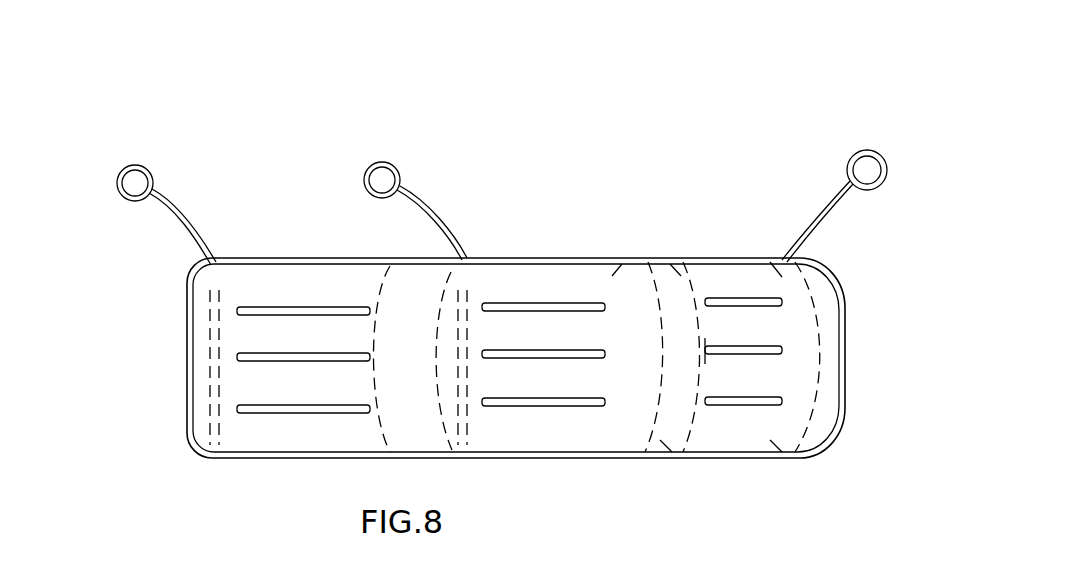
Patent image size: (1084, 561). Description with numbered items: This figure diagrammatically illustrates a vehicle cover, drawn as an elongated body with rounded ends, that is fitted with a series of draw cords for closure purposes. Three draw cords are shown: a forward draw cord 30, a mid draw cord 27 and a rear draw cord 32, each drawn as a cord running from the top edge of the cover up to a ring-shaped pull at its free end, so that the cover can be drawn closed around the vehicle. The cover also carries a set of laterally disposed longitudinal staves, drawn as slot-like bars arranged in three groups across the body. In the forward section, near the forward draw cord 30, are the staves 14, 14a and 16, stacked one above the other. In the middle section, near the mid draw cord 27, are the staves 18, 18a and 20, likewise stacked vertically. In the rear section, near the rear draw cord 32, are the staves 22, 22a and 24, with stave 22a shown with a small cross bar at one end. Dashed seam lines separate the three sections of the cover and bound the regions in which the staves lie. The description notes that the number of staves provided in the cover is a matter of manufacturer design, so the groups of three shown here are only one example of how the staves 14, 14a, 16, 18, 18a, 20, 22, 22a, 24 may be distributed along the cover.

The longitudinal stave 14 is at (293, 303).
The longitudinal stave 14a is at (323, 352).
The longitudinal stave 16 is at (313, 413).
The longitudinal stave 18 is at (547, 303).
The longitudinal stave 18a is at (510, 349).
The longitudinal stave 20 is at (523, 407).
The longitudinal stave 22 is at (727, 302).
The longitudinal stave 22a is at (740, 347).
The longitudinal stave 24 is at (730, 405).
The draw cord 27 is at (363, 177).
The draw cord 30 is at (151, 168).
The draw cord 32 is at (847, 168).